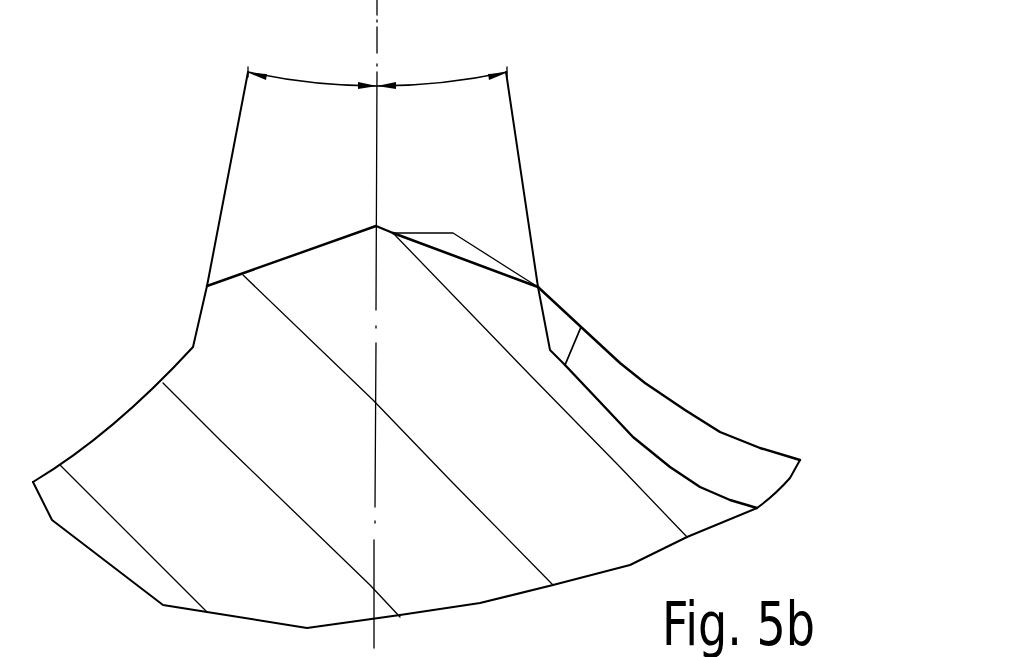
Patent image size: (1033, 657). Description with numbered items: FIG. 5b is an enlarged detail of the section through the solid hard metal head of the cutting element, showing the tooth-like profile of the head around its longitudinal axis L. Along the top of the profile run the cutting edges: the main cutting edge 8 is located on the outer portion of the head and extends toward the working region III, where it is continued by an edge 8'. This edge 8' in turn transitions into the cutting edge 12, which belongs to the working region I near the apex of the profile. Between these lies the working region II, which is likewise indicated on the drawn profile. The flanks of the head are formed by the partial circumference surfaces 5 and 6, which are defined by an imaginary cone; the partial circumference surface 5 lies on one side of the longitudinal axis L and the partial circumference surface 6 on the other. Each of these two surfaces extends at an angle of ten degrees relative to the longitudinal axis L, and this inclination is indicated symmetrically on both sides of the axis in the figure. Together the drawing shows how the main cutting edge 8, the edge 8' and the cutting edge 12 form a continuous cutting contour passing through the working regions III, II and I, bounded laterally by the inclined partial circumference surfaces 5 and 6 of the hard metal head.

The partial circumference surface 5 is at (197, 320).
The partial circumference surface 6 is at (548, 338).
The main cutting edge 8 is at (785, 437).
The edge 8' is at (661, 413).
The cutting edge 12 is at (487, 253).
The longitudinal axis L is at (378, 45).
The working region I is at (466, 214).
The working region II is at (784, 412).
The working region III is at (588, 292).